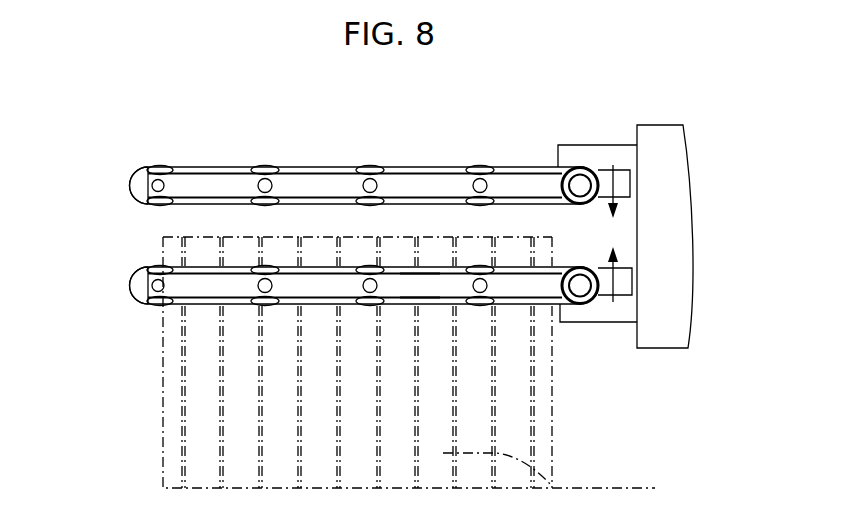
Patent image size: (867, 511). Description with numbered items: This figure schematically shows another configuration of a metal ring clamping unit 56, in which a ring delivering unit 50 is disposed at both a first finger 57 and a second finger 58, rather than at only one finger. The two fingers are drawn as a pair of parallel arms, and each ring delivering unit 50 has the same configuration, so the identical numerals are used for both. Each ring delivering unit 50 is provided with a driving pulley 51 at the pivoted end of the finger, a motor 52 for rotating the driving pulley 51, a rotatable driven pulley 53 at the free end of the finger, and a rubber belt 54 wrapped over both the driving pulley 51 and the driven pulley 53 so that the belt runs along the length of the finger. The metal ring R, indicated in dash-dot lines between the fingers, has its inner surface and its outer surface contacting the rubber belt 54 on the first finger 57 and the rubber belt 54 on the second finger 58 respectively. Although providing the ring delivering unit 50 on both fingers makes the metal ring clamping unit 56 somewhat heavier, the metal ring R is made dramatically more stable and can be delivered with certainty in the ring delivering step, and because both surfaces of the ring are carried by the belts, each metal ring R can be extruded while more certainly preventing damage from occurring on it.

The ring delivering unit 50 is at (376, 239).
The driving pulley 51 is at (582, 177).
The motor 52 is at (619, 168).
The driven pulley 53 is at (140, 189).
The rubber belt 54 is at (213, 167).
The metal ring clamping unit 56 is at (532, 120).
The first finger 57 is at (307, 187).
The second finger 58 is at (420, 285).
The metal ring R is at (418, 369).